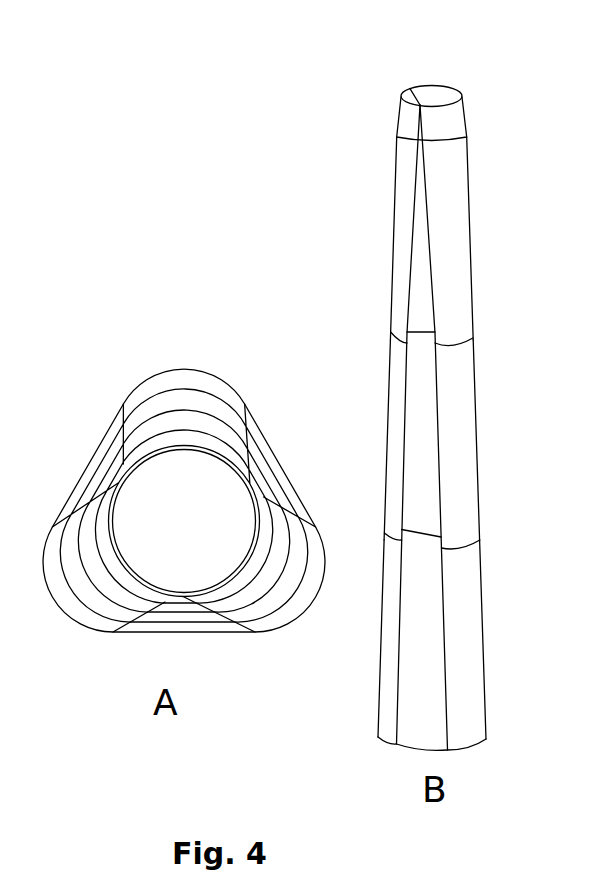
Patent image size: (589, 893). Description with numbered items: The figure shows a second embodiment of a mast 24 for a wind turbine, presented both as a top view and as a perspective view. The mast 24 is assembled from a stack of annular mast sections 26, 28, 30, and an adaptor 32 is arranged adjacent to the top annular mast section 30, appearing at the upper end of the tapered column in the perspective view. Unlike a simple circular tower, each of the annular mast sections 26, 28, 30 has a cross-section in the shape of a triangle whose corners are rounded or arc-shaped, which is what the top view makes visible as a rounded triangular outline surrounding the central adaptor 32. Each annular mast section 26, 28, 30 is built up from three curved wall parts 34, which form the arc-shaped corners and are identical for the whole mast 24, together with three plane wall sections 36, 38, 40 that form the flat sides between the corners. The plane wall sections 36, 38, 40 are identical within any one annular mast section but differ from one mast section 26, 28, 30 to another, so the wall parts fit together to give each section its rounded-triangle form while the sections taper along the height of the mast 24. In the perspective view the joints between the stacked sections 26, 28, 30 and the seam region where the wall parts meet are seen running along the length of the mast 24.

In FIG. 4A, the mast 24 is at (172, 320).
In FIG. 4B, the mast 24 is at (467, 58).
In FIG. 4B, the annular mast section 26 is at (500, 650).
In FIG. 4B, the annular mast section 28 is at (488, 436).
In FIG. 4B, the top annular mast section 30 is at (484, 230).
In FIG. 4B, the adaptor 32 is at (455, 122).
In FIG. 4A, the curved wall part 34 is at (210, 378).
In FIG. 4B, the curved wall part 34 is at (397, 255).
In FIG. 4A, the plane wall section 36 is at (142, 628).
In FIG. 4B, the plane wall section 36 is at (413, 732).
In FIG. 4A, the plane wall section 38 is at (170, 613).
In FIG. 4B, the plane wall section 38 is at (415, 466).
In FIG. 4A, the plane wall section 40 is at (193, 605).
In FIG. 4B, the plane wall section 40 is at (417, 220).